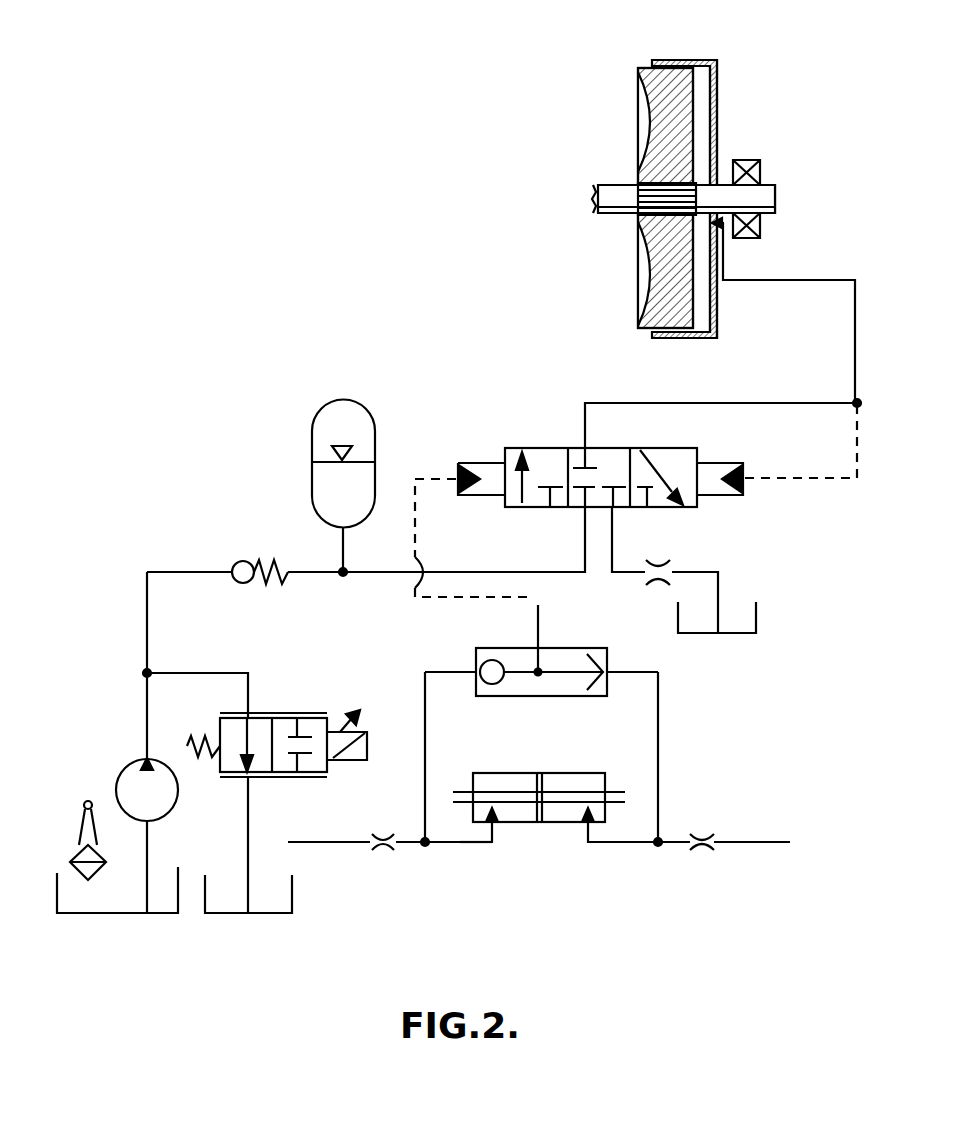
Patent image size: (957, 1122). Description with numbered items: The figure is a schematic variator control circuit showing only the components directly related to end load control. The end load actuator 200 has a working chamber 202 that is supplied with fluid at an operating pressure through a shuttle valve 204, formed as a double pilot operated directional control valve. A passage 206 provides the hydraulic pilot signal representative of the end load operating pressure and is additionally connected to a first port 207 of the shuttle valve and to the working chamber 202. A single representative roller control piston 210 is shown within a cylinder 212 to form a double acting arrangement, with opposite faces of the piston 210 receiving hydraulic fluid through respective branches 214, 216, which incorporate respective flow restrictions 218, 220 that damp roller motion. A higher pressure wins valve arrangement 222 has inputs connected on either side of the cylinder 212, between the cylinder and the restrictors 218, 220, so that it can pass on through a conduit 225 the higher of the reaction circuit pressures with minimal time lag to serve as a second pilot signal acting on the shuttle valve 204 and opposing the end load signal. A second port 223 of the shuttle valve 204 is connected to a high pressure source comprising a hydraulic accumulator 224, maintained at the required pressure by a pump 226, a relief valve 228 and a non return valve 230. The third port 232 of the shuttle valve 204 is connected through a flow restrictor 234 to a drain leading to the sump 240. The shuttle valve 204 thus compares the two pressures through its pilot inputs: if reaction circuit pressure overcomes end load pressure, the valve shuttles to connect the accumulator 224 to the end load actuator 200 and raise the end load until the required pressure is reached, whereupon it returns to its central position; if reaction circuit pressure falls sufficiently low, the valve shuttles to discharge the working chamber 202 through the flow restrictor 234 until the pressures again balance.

The end load actuator 200 is at (723, 206).
The working chamber 202 is at (698, 115).
The shuttle valve 204 is at (594, 455).
The passage 206 is at (780, 480).
The first port 207 is at (582, 466).
The roller control piston 210 is at (542, 824).
The cylinder 212 is at (593, 819).
The branch 214 is at (463, 846).
The branch 216 is at (630, 848).
The flow restriction 218 is at (388, 865).
The flow restriction 220 is at (706, 866).
The higher pressure wins valve arrangement 222 is at (548, 712).
The second port 223 is at (583, 508).
The hydraulic accumulator 224 is at (323, 407).
The conduit 225 is at (413, 527).
The pump 226 is at (113, 755).
The relief valve 228 is at (307, 790).
The non return valve 230 is at (270, 585).
The third port 232 is at (612, 508).
The flow restrictor 234 is at (648, 585).
The sump 240 is at (773, 625).